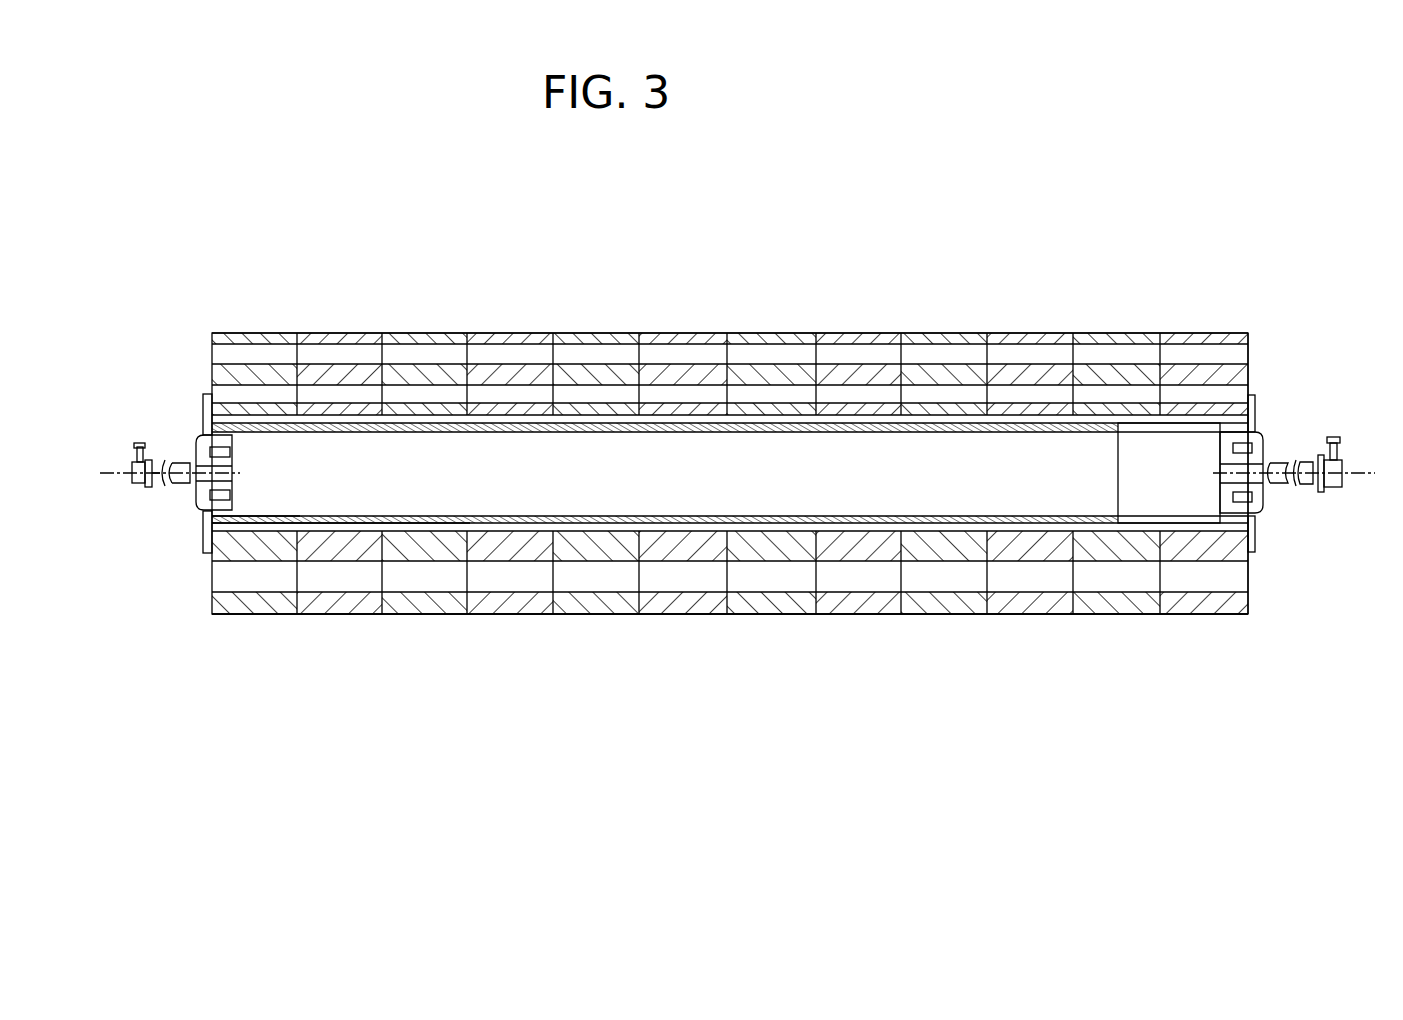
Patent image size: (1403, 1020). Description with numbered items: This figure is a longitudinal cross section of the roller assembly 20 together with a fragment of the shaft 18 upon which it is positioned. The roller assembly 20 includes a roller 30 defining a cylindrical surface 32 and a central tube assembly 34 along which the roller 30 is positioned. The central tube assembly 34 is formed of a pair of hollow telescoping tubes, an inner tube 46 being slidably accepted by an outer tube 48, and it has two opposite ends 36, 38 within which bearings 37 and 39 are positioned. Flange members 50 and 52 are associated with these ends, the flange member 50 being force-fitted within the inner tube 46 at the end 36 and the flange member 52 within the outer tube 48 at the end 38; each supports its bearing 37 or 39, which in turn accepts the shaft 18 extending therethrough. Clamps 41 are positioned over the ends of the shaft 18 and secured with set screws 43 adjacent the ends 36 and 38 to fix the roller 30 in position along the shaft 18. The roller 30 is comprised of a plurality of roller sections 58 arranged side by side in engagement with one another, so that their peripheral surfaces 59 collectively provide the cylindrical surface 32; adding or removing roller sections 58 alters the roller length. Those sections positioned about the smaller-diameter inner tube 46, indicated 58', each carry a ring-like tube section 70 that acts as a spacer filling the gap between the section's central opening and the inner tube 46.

The roller assembly 20 is at (790, 262).
The peripheral surfaces 59 is at (267, 334).
The roller sections 58 is at (841, 620).
The roller sections positioned about the inner tube 58' is at (317, 623).
The ring-like tube section 70 is at (282, 517).
The outer tube 48 is at (700, 520).
The inner tube 46 is at (760, 517).
The end of central tube assembly 36 is at (243, 527).
The roller 30 is at (1137, 615).
The cylindrical surface 32 is at (1182, 615).
The end of central tube assembly 38 is at (1225, 531).
The flange member 50 is at (203, 395).
The flange member 52 is at (1257, 398).
The bearing 37 is at (195, 492).
The bearing 39 is at (1263, 507).
The central tube assembly 34 is at (187, 537).
The shaft 18 is at (180, 463).
The clamps 41 is at (137, 487).
The set screws 43 is at (140, 445).